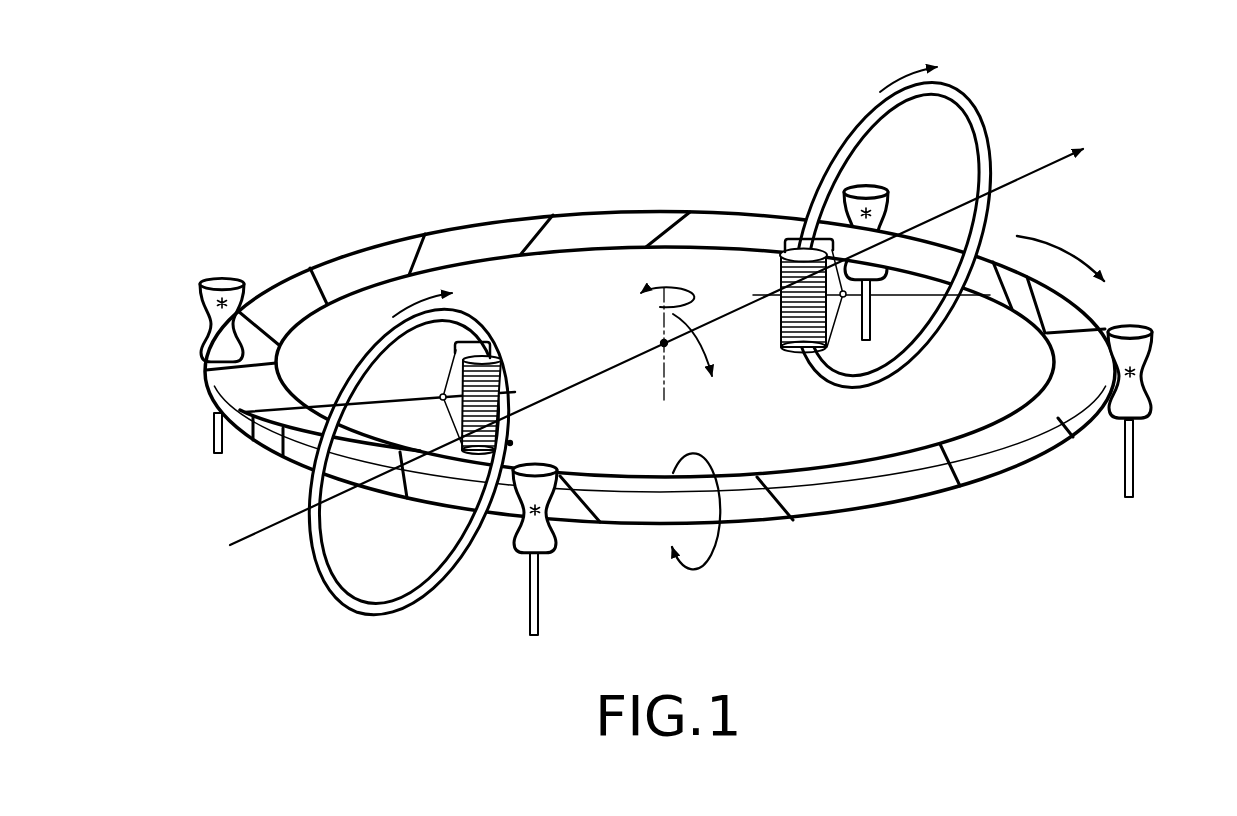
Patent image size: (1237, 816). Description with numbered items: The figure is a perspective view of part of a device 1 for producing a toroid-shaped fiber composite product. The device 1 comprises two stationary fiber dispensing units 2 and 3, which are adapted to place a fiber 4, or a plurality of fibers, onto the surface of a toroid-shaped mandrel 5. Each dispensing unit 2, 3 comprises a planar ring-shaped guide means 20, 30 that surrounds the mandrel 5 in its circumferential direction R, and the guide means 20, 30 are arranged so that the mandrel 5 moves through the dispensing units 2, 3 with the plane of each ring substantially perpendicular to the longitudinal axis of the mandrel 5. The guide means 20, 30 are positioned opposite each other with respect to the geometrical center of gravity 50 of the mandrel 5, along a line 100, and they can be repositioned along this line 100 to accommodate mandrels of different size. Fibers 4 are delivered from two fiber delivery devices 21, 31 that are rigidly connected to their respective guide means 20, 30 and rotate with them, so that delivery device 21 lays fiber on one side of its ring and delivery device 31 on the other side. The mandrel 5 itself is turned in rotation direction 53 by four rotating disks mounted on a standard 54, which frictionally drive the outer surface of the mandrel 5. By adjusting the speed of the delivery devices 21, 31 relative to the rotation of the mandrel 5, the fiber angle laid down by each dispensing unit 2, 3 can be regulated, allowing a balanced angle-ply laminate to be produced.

The device 1 is at (240, 120).
The fiber dispensing unit 2 is at (380, 478).
The fiber dispensing unit 3 is at (877, 227).
The fiber 4 is at (331, 280).
The toroid-shaped mandrel 5 is at (657, 334).
The ring-shaped guide means 20 is at (418, 578).
The fiber delivery device 21 is at (441, 359).
The ring-shaped guide means 30 is at (991, 118).
The fiber delivery device 31 is at (774, 276).
The geometrical center of gravity 50 is at (660, 343).
The rotation direction 53 is at (634, 292).
The standard 54 is at (213, 433).
The line 100 is at (1048, 165).
The circumferential direction R is at (721, 548).